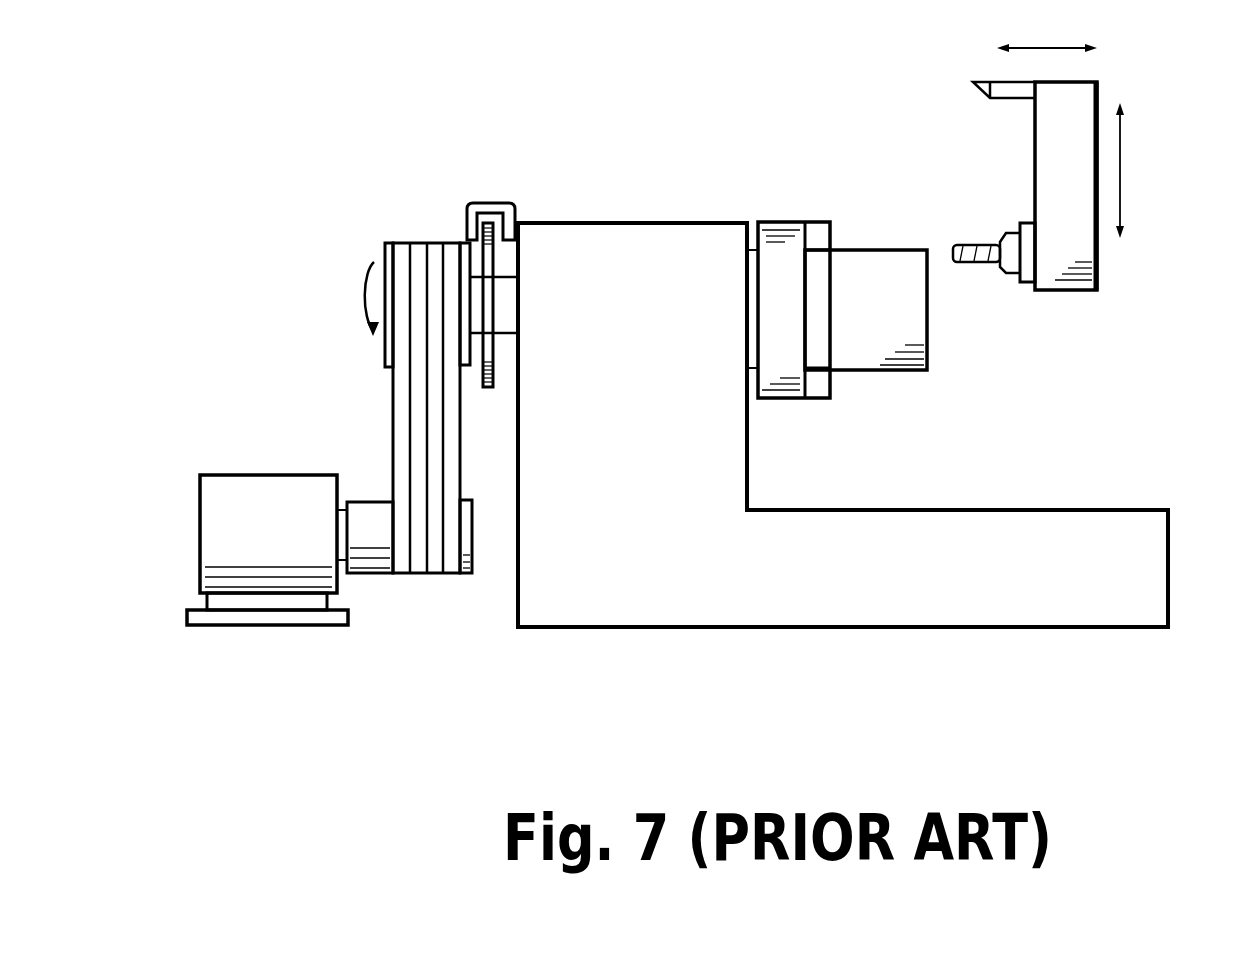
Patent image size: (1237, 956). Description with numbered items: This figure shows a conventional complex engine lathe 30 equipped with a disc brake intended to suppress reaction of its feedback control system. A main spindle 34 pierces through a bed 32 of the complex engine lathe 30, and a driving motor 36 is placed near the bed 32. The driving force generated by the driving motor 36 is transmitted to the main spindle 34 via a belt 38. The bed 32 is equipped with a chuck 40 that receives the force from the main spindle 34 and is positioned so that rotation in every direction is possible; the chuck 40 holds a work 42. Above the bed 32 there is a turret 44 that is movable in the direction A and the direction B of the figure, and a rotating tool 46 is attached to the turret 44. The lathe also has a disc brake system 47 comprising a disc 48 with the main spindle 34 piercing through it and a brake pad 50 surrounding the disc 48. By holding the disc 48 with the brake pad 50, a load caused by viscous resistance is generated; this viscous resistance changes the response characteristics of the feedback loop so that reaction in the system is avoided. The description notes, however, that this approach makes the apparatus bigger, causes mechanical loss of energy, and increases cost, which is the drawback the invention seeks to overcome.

The complex engine lathe 30 is at (1129, 481).
The bed 32 is at (951, 510).
The main spindle 34 is at (510, 274).
The driving motor 36 is at (340, 593).
The belt 38 is at (389, 409).
The chuck 40 is at (797, 222).
The work 42 is at (883, 250).
The turret 44 is at (1100, 82).
The rotating tool 46 is at (975, 265).
The disc brake system 47 is at (511, 166).
The disc 48 is at (484, 389).
The brake pad 50 is at (517, 208).
The direction A is at (1047, 35).
The direction B is at (1131, 170).